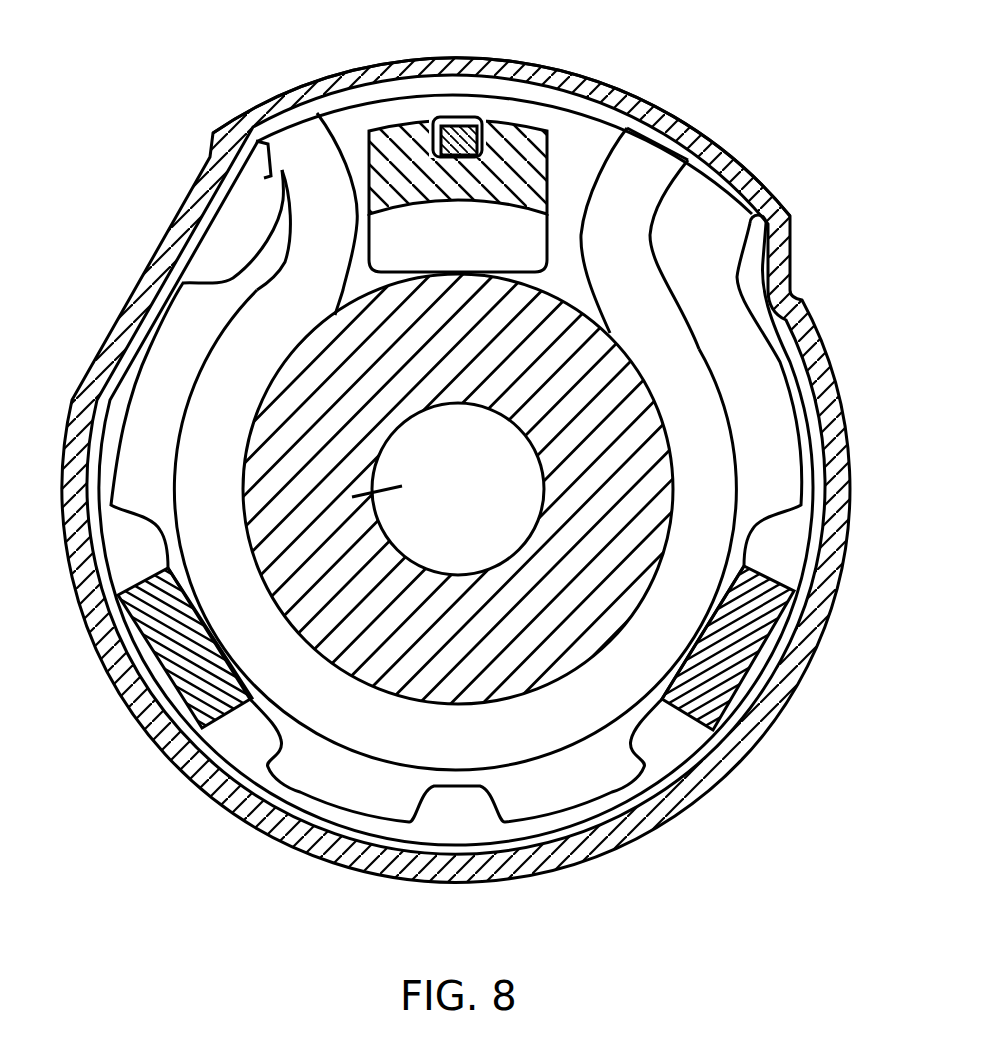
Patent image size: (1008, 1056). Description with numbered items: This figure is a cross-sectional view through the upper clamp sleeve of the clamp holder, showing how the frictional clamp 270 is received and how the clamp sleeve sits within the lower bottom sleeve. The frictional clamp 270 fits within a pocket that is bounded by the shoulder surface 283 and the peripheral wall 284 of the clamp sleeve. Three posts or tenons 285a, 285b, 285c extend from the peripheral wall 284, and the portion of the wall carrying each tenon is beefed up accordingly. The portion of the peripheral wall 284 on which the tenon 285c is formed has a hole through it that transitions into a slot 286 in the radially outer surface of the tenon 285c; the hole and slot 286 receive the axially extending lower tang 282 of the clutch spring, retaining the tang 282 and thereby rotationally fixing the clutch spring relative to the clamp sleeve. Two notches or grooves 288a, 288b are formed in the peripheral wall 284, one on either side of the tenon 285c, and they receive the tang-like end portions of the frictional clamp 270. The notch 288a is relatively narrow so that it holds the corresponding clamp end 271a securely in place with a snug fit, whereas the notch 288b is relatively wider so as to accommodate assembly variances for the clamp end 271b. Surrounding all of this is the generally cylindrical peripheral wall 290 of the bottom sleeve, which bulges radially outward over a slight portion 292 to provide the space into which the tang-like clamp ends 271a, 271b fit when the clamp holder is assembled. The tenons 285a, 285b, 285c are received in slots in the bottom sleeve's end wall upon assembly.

The frictional clamp 270 is at (335, 715).
The end of the frictional clamp 271a is at (292, 150).
The clamp end 271b is at (650, 160).
The lower tang 282 is at (447, 117).
The shoulder surface 283 is at (745, 387).
The peripheral wall 284 is at (767, 296).
The tenon 285a is at (188, 678).
The tenon 285b is at (733, 693).
The tenon 285c is at (507, 145).
The slot 286 is at (483, 117).
The notch 288a is at (242, 162).
The notch 288b is at (702, 206).
The peripheral wall 290 is at (453, 867).
The bulged portion 292 is at (356, 88).